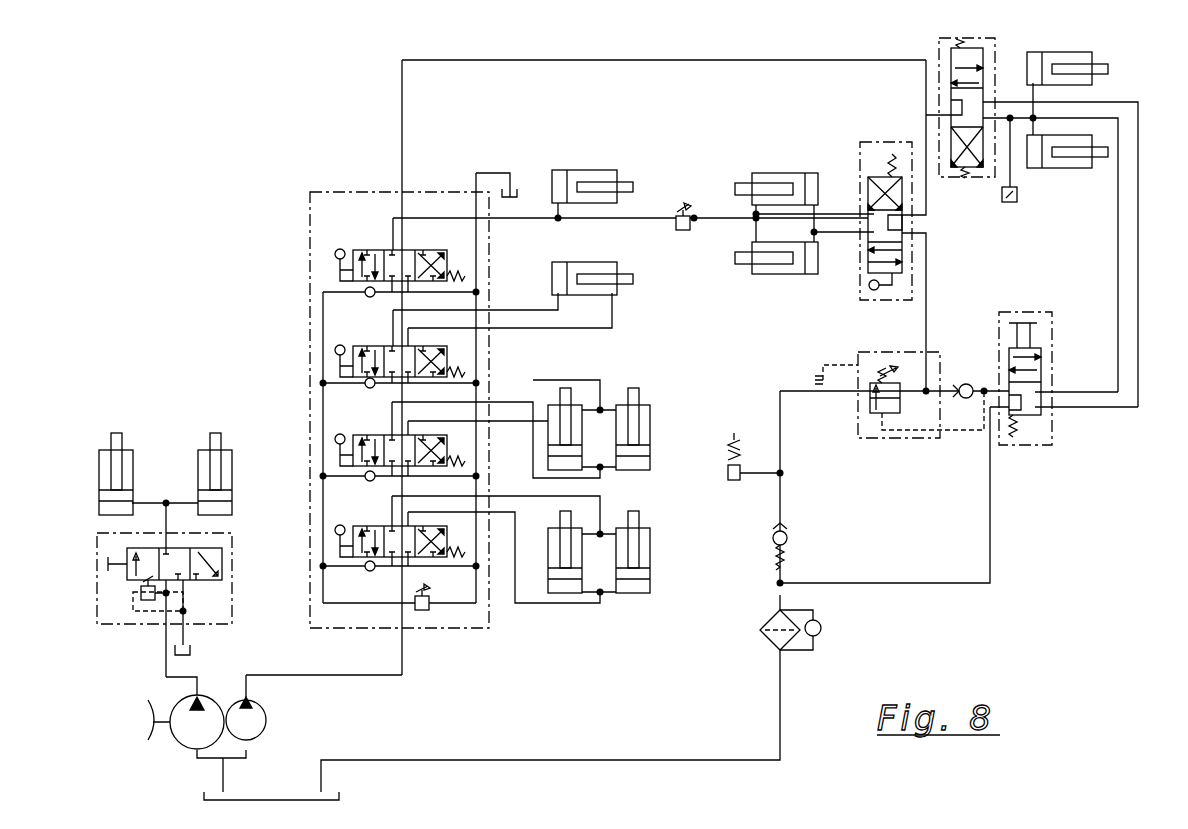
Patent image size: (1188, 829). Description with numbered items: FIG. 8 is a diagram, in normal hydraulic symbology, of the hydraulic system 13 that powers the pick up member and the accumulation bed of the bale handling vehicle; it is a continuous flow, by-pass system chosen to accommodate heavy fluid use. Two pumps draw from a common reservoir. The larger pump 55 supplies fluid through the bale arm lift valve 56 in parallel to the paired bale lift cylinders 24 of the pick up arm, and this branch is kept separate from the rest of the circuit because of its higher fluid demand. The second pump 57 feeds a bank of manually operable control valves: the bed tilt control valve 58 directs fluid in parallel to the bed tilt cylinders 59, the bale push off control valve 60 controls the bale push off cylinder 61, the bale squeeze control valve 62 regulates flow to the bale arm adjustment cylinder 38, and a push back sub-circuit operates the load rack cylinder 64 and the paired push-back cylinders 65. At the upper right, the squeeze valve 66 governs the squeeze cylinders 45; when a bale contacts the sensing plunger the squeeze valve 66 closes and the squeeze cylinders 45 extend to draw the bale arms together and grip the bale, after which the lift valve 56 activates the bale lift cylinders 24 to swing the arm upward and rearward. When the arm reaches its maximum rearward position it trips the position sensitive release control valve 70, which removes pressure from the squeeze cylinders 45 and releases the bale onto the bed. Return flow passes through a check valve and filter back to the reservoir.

The hydraulic system 13 is at (761, 772).
The bale lift cylinders 24 is at (205, 470).
The bale arm adjustment cylinder 38 is at (605, 263).
The squeeze cylinders 45 is at (1073, 140).
The larger pump 55 is at (178, 730).
The bale arm lift valve 56 is at (127, 565).
The pump 57 is at (258, 712).
The bed tilt control valve 58 is at (345, 540).
The bed tilt cylinders 59 is at (628, 598).
The bale push off control valve 60 is at (345, 450).
The bale push off cylinder 61 is at (622, 420).
The bale squeeze control valve 62 is at (345, 360).
The load rack cylinder 64 is at (594, 172).
The push-back cylinders 65 is at (775, 250).
The squeeze valve 66 is at (953, 78).
The position sensitive release control valve 70 is at (1044, 378).